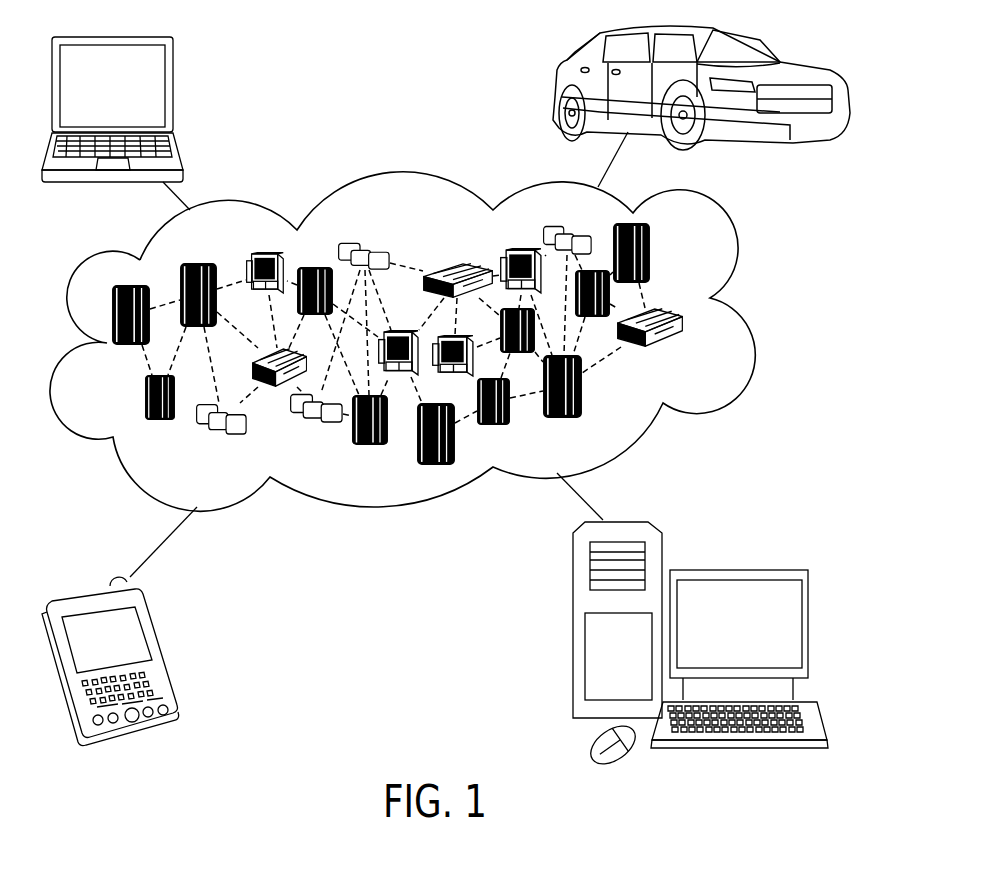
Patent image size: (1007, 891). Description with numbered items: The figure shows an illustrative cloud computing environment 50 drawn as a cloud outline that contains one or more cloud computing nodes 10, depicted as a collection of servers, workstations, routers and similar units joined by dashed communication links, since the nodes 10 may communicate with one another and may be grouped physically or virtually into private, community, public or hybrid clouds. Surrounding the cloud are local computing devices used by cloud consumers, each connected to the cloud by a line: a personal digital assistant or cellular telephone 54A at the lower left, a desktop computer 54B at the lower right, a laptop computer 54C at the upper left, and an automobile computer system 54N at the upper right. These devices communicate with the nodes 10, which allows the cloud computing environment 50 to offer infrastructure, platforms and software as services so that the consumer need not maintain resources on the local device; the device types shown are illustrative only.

The cloud computing nodes 10 is at (706, 356).
The cloud computing environment 50 is at (753, 333).
The personal digital assistant (PDA) or cellular telephone 54A is at (160, 647).
The desktop computer 54B is at (770, 570).
The laptop computer 54C is at (173, 100).
The automobile computer system 54N is at (555, 78).